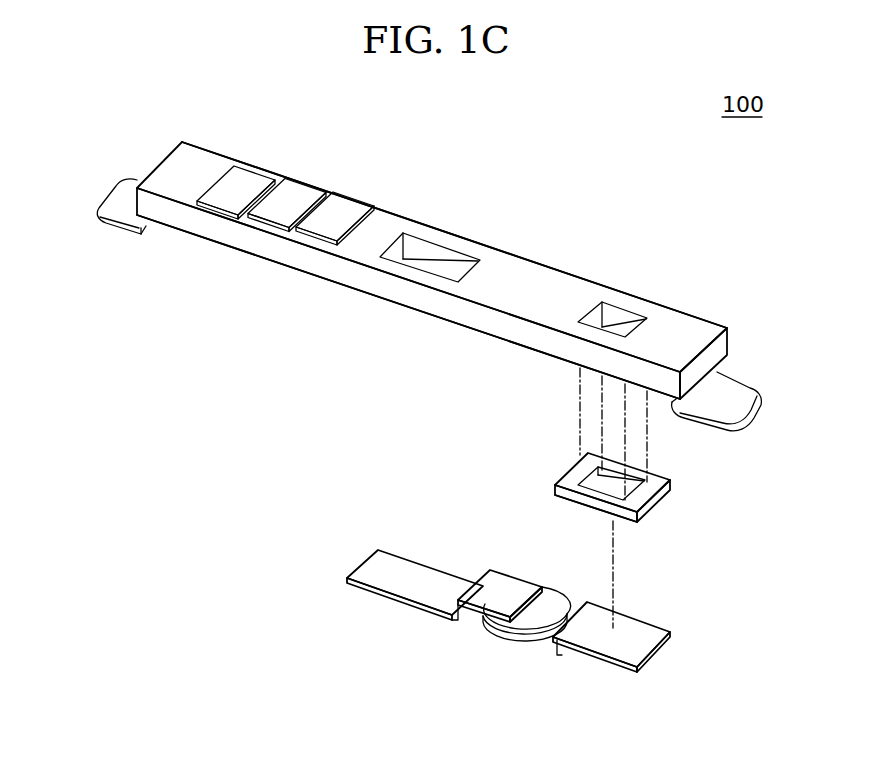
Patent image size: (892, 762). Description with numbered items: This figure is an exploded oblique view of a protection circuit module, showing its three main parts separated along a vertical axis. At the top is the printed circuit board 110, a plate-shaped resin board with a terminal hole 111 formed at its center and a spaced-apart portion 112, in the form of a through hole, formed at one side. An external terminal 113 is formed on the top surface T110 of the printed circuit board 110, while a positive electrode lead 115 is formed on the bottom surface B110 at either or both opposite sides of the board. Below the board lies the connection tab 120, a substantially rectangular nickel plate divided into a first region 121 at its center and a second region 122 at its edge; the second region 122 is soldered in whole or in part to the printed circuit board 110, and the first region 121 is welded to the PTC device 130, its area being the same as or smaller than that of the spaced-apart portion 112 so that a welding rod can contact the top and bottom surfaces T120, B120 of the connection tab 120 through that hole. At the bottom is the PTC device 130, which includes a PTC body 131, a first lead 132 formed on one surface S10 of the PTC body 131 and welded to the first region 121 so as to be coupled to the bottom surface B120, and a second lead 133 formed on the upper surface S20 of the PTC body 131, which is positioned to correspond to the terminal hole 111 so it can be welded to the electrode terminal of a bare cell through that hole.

The printed circuit board 110 is at (178, 162).
The terminal hole 111 is at (438, 257).
The spaced-apart portion 112 is at (620, 317).
The external terminal 113 is at (348, 205).
The positive electrode lead 115 is at (113, 205).
The top surface T110 is at (688, 322).
The bottom surface B110 is at (483, 341).
The connection tab 120 is at (630, 507).
The first region 121 is at (602, 487).
The second region 122 is at (647, 498).
The top surface T120 is at (562, 477).
The bottom surface B120 is at (630, 522).
The positive temperature coefficient device 130 is at (460, 629).
The PTC body 131 is at (527, 618).
The first lead 132 is at (615, 643).
The second lead 133 is at (407, 590).
The one surface S10 is at (493, 636).
The upper surface S20 is at (551, 600).